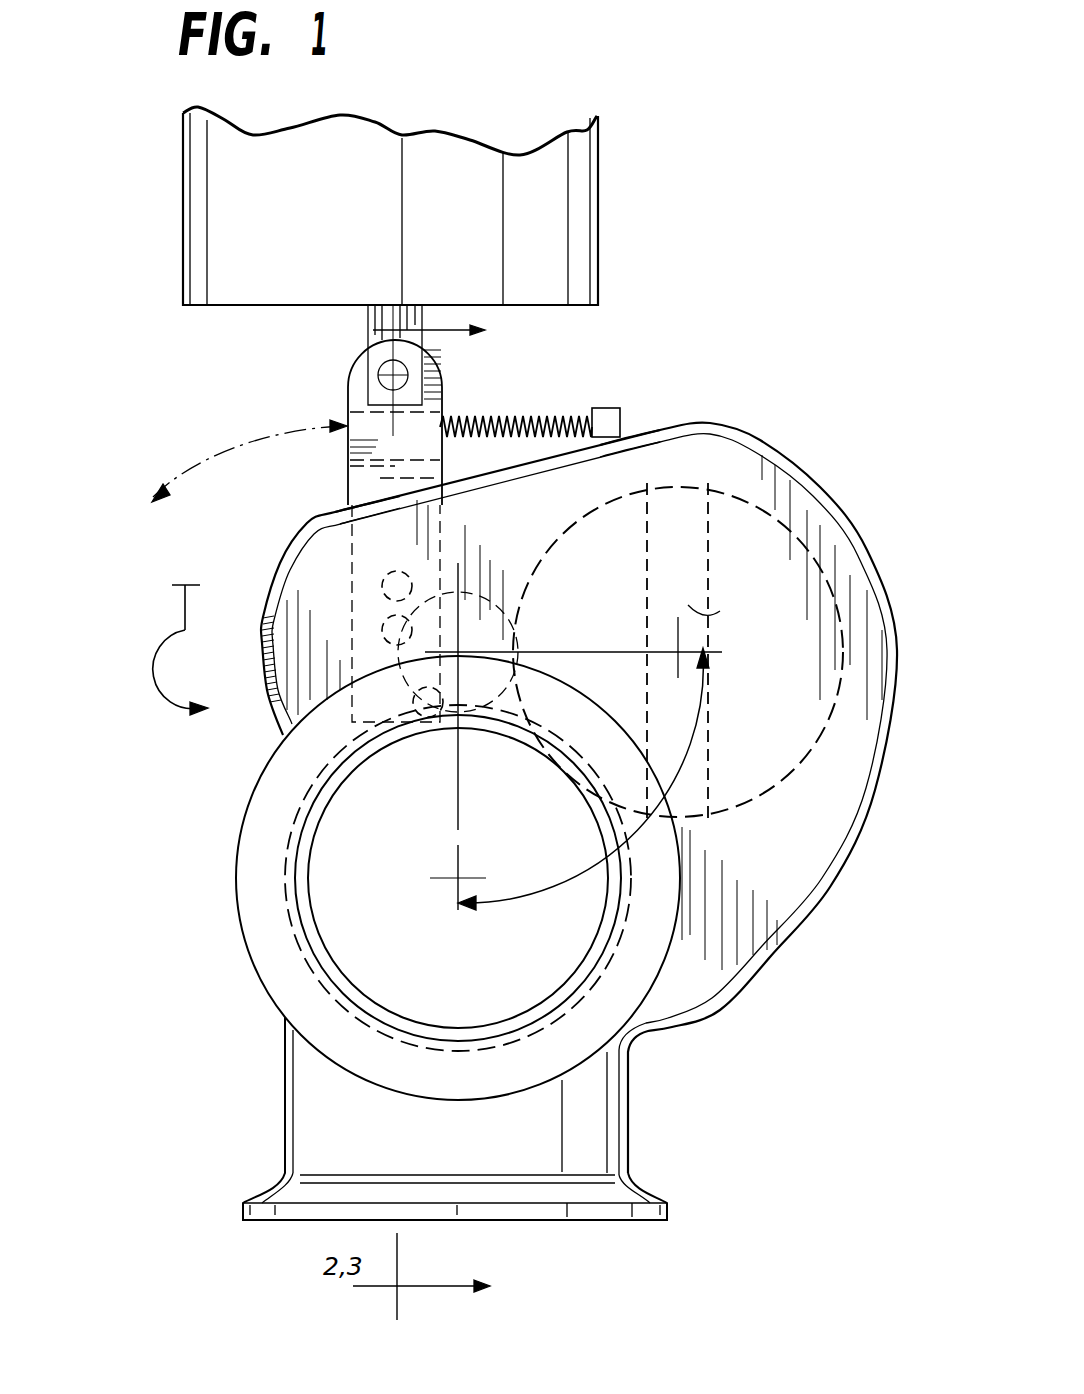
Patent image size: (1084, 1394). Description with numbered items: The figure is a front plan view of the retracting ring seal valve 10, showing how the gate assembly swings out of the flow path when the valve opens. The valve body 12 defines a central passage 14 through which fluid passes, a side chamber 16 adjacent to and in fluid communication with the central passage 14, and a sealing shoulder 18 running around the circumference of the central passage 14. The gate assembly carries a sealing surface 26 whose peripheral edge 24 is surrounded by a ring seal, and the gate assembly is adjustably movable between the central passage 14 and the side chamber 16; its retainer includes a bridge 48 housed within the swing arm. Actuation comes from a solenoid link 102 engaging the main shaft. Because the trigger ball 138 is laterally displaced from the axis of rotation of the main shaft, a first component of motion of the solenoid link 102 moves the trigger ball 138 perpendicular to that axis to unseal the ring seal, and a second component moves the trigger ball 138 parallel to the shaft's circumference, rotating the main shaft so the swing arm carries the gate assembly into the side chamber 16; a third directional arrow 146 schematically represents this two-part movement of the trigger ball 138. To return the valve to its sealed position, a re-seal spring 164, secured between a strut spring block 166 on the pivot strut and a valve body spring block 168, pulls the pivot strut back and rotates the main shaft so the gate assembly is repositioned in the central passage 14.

The retracting ring seal valve 10 is at (143, 388).
The valve body 12 is at (522, 519).
The central passage 14 is at (371, 905).
The side chamber 16 is at (818, 763).
The sealing shoulder 18 is at (348, 764).
The peripheral edge 24 is at (716, 478).
The sealing surface 26 is at (777, 537).
The bridge 48 is at (724, 612).
The solenoid link 102 is at (350, 446).
The trigger ball 138 is at (410, 540).
The third directional arrow 146 is at (152, 697).
The re-seal spring 164 is at (530, 423).
The strut spring block 166 is at (360, 410).
The valve body spring block 168 is at (612, 410).